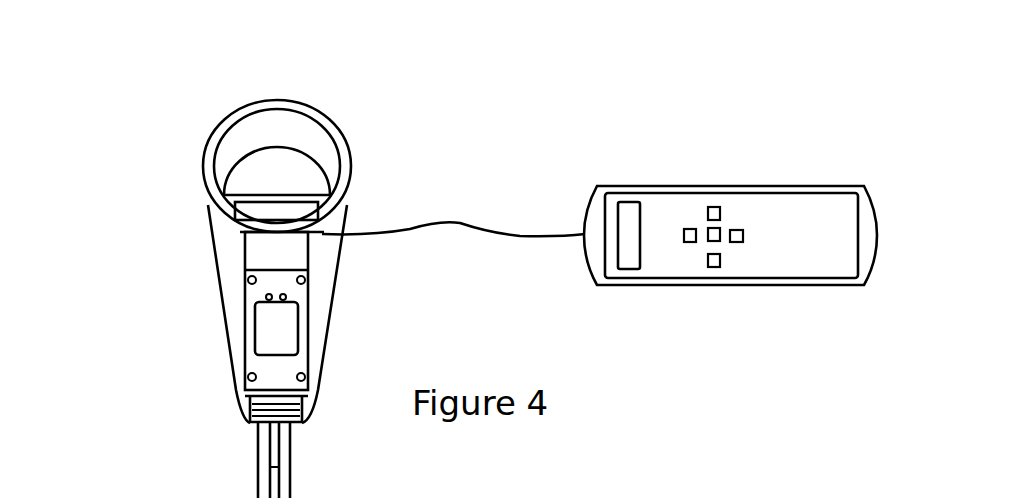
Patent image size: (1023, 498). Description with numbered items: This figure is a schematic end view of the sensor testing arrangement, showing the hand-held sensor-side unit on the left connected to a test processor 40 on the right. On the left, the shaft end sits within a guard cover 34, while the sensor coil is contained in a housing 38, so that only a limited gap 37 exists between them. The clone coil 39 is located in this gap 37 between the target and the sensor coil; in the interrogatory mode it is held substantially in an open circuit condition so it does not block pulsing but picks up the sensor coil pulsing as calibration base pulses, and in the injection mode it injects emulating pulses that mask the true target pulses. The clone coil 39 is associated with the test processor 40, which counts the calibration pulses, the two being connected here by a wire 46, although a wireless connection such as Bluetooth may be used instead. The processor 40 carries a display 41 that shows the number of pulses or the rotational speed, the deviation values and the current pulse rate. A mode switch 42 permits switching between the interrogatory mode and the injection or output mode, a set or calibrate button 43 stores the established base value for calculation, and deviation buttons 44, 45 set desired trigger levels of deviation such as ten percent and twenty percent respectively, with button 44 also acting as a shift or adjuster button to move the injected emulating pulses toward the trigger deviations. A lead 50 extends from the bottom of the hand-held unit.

The guard cover 34 is at (238, 144).
The gap 37 is at (232, 238).
The housing 38 is at (248, 353).
The clone coil 39 is at (325, 238).
The test processor 40 is at (888, 233).
The display 41 is at (638, 188).
The mode switch 42 is at (724, 270).
The set or calibrate button 43 is at (724, 216).
The deviation button 44 is at (752, 224).
The deviation button 45 is at (680, 250).
The wire 46 is at (444, 206).
The power cord 50 is at (903, 497).